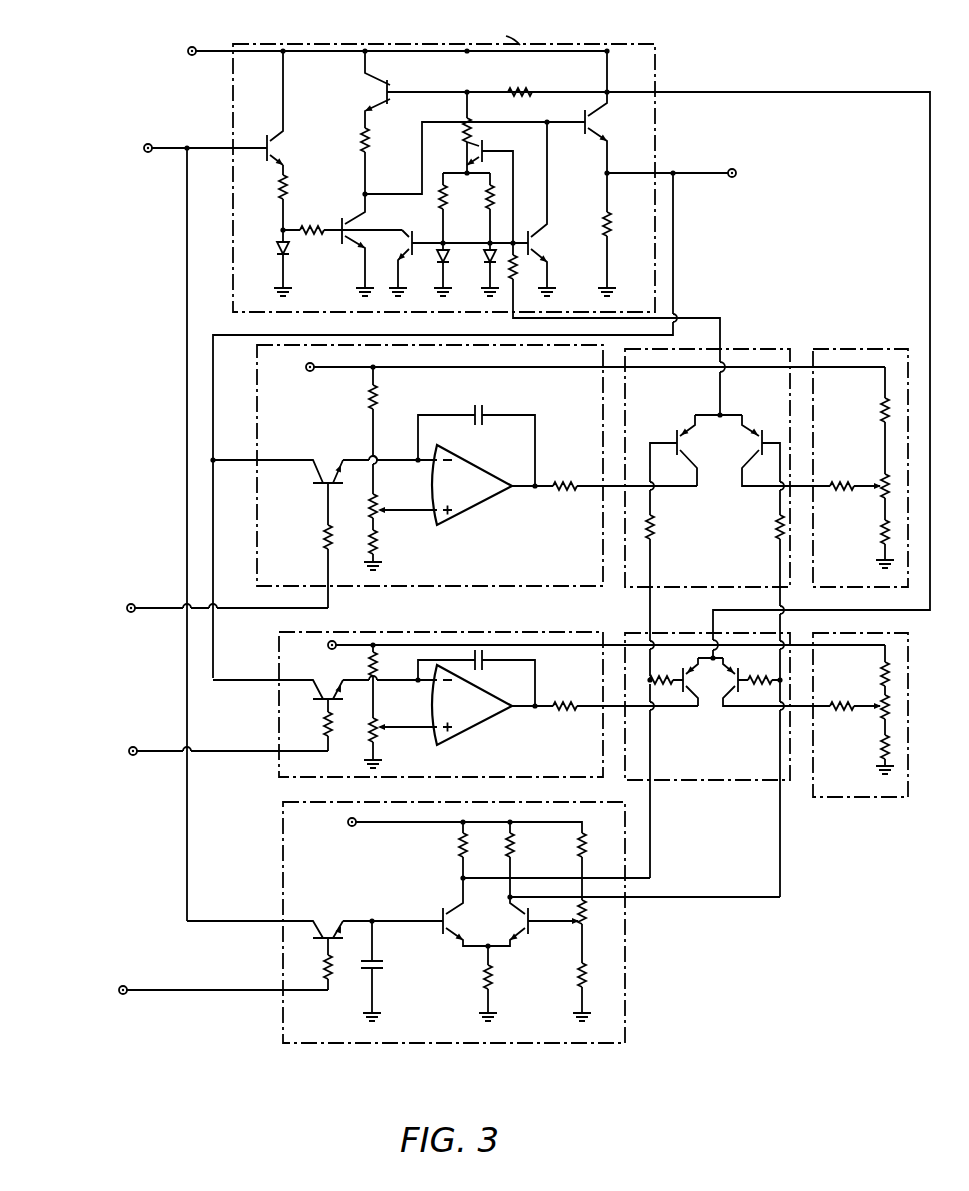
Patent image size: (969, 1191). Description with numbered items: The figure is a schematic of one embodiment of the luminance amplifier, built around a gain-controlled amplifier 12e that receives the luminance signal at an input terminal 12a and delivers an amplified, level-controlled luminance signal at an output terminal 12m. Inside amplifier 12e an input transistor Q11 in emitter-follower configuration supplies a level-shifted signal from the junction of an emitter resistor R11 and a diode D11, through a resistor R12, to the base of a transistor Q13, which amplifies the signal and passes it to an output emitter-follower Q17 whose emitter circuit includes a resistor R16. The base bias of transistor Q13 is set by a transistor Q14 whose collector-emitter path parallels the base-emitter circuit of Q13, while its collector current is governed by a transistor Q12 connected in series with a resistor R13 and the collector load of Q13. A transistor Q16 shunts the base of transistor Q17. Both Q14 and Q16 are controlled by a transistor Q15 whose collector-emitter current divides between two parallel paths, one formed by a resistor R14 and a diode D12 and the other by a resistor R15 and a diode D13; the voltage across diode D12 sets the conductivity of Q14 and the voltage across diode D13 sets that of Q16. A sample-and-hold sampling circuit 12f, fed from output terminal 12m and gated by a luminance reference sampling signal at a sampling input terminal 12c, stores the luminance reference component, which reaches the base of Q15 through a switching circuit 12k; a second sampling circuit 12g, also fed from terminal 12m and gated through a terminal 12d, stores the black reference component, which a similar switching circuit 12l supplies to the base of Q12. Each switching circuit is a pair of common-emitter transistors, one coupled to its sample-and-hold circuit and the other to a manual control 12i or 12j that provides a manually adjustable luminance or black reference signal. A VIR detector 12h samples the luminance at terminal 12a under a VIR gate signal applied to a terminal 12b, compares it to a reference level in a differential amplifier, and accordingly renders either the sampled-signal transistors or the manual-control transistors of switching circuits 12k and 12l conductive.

The input terminal 12a is at (151, 522).
The terminal 12b is at (186, 1003).
The sampling input terminal 12c is at (178, 630).
The terminal 12d is at (181, 777).
The gain-controlled amplifier 12e is at (655, 128).
The sampling circuit 12f is at (257, 400).
The sampling circuit 12g is at (279, 720).
The VIR detector 12h is at (283, 860).
The manual control 12i is at (869, 350).
The manual control 12j is at (858, 798).
The switching circuit 12k is at (788, 350).
The switching circuit 12l is at (758, 782).
The output terminal 12m is at (760, 182).
The input transistor Q11 is at (268, 132).
The transistor Q12 is at (395, 88).
The transistor Q13 is at (341, 240).
The transistor Q14 is at (411, 233).
The transistor Q15 is at (476, 152).
The transistor Q16 is at (540, 251).
The output emitter-follower Q17 is at (590, 137).
The emitter resistor R11 is at (282, 190).
The resistor R12 is at (318, 226).
The resistor R13 is at (360, 143).
The resistor R14 is at (445, 213).
The resistor R15 is at (487, 200).
The resistor R16 is at (611, 228).
The diode D11 is at (281, 250).
The diode D12 is at (438, 264).
The diode D13 is at (486, 270).